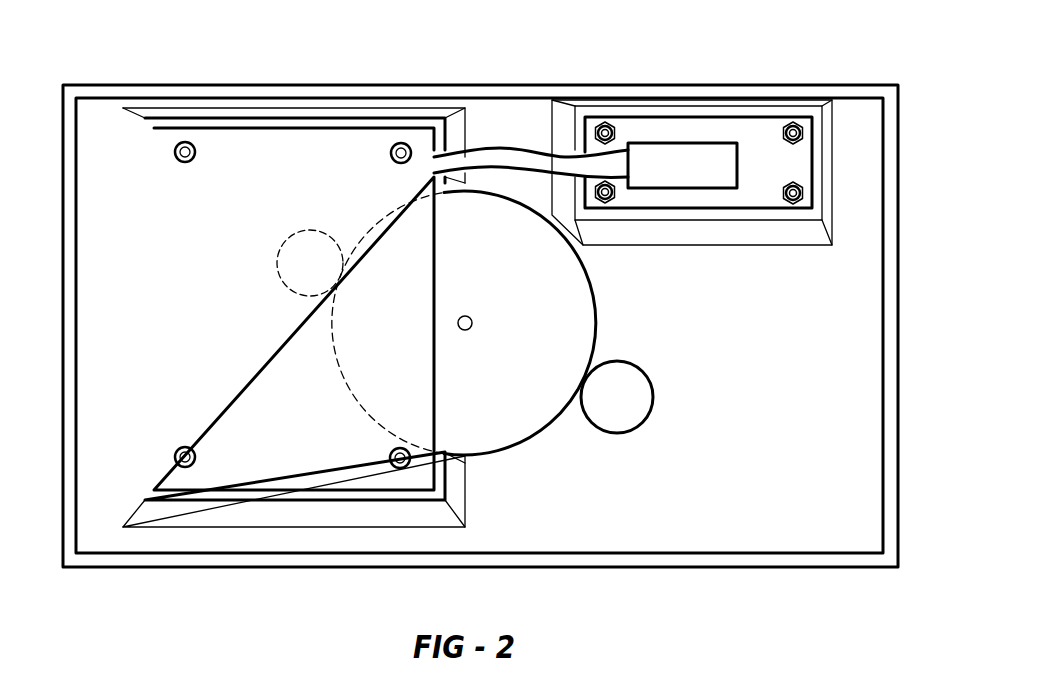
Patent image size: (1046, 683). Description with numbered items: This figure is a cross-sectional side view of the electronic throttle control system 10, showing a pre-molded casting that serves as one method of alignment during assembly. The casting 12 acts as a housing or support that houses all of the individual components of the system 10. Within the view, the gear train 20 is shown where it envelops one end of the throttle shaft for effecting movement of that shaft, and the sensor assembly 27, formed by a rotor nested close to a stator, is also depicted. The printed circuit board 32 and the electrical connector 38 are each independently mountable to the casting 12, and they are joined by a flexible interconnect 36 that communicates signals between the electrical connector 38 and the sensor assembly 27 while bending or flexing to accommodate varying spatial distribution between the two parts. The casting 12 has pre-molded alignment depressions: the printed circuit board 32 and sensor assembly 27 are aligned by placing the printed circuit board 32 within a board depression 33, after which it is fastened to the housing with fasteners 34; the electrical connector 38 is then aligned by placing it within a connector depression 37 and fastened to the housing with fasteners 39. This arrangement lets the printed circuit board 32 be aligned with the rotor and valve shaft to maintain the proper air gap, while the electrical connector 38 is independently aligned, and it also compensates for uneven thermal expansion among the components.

The electronic throttle control system 10 is at (97, 78).
The casting 12 is at (890, 115).
The gear train 20 is at (492, 227).
The sensor assembly 27 is at (314, 230).
The printed circuit board 32 is at (280, 153).
The board depression 33 is at (181, 115).
The fasteners 34 is at (194, 147).
The flexible interconnect 36 is at (535, 157).
The connector depression 37 is at (828, 143).
The electrical connector 38 is at (753, 143).
The fasteners 39 is at (605, 124).